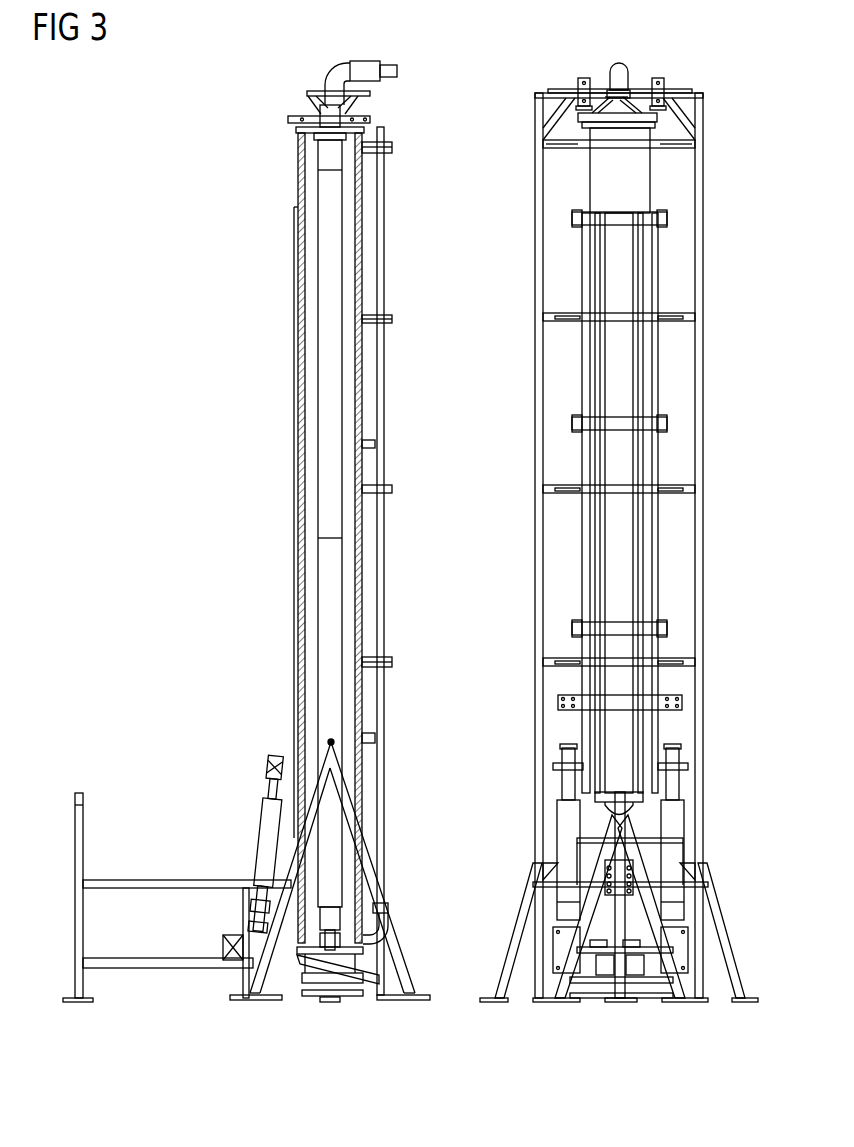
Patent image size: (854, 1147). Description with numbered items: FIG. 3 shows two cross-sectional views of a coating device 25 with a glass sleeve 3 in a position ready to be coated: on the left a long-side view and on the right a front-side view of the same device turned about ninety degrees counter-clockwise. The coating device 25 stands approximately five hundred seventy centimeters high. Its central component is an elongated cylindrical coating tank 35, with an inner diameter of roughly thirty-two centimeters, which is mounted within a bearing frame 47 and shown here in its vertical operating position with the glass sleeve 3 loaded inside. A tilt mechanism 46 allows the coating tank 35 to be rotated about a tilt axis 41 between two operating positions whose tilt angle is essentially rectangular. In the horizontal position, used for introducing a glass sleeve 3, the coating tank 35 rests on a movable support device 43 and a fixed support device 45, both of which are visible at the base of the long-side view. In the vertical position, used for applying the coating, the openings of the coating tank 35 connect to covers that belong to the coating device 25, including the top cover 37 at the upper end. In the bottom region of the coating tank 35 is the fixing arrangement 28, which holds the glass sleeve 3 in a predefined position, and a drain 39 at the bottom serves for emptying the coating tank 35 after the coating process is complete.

The glass sleeve 3 is at (330, 414).
The coating device 25 is at (774, 64).
The fixing arrangement 28 is at (519, 73).
The coating tank 35 is at (299, 497).
The top cover 37 is at (303, 96).
The drain 39 is at (371, 984).
The tilt axis 41 is at (328, 742).
The movable support device 43 is at (263, 838).
The fixed support device 45 is at (83, 823).
The tilt mechanism 46 is at (67, 720).
The bearing frame 47 is at (380, 252).